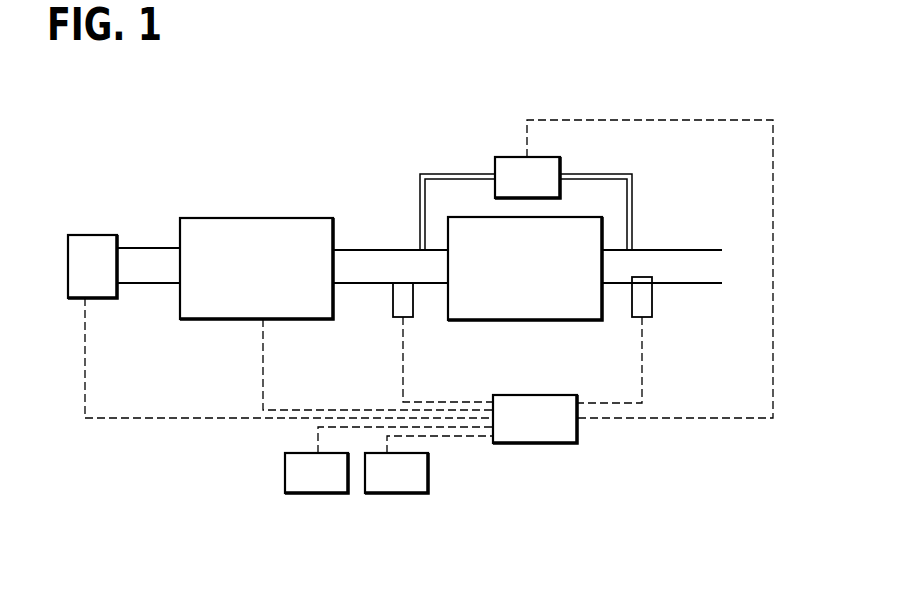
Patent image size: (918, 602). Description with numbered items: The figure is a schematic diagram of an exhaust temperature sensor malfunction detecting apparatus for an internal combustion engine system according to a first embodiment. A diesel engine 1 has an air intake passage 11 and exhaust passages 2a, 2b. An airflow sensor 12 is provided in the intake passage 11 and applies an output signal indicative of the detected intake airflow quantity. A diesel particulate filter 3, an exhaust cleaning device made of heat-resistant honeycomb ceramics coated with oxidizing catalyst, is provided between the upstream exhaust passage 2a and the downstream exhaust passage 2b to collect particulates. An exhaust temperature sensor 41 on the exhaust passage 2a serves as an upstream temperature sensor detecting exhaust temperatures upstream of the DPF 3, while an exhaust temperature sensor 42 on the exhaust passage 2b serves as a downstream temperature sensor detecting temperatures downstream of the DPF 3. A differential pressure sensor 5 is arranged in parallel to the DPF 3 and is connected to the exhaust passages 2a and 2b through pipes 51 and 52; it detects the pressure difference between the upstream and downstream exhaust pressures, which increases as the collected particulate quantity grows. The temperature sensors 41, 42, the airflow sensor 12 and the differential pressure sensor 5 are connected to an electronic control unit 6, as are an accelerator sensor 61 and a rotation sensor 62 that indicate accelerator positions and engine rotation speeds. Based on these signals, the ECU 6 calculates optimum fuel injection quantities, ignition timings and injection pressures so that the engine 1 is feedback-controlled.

The diesel engine 1 is at (267, 218).
The air intake passage 11 is at (140, 275).
The airflow sensor 12 is at (88, 235).
The exhaust passage 2a is at (358, 267).
The exhaust passage 2b is at (665, 270).
The diesel particulate filter 3 is at (538, 320).
The exhaust temperature sensor 41 is at (395, 317).
The exhaust temperature sensor 42 is at (652, 307).
The differential pressure sensor 5 is at (512, 157).
The pipe 51 is at (443, 175).
The pipe 52 is at (603, 175).
The electronic control unit 6 is at (543, 443).
The accelerator sensor 61 is at (428, 470).
The rotation sensor 62 is at (285, 475).